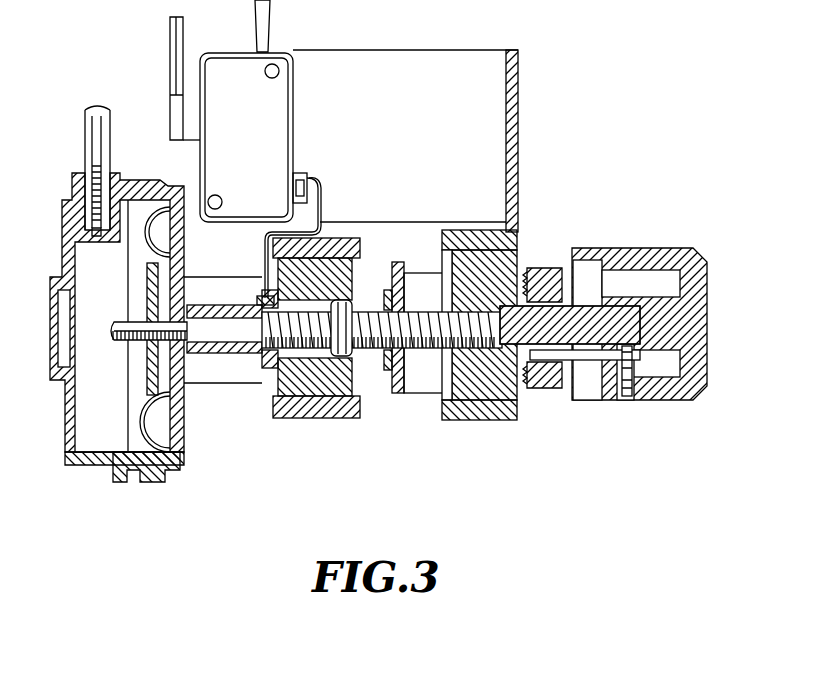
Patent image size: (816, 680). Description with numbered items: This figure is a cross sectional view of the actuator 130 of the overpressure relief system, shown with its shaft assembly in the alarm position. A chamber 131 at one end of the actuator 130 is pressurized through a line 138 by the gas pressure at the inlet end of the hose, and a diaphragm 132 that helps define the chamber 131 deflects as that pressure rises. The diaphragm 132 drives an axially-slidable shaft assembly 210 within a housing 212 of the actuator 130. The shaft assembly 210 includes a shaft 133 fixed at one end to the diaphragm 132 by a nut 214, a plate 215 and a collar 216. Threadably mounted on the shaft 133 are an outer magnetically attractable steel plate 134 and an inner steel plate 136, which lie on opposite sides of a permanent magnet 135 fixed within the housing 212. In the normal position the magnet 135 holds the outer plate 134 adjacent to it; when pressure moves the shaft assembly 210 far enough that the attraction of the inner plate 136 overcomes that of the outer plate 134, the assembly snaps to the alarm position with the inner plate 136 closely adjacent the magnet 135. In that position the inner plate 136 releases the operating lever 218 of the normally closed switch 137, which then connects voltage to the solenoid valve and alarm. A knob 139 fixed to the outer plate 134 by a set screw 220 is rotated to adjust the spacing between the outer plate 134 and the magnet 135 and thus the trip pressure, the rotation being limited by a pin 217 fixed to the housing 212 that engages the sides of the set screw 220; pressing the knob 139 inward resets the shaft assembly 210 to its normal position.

The actuator 130 is at (338, 417).
The chamber 131 is at (90, 413).
The diaphragm 132 is at (137, 397).
The shaft 133 is at (378, 372).
The outer magnetically attractable member or steel plate 134 is at (400, 390).
The permanent magnet 135 is at (300, 386).
The inner magnetically attractable member or steel plate 136 is at (272, 383).
The normally closed switch 137 is at (266, 127).
The line 138 is at (86, 138).
The knob 139 is at (670, 248).
The axially-slidable shaft assembly 210 is at (424, 302).
The housing 212 is at (218, 385).
The nut 214 is at (138, 342).
The plate 215 is at (148, 274).
The collar 216 is at (203, 303).
The pin 217 is at (578, 362).
The operating lever 218 is at (312, 190).
The set screw 220 is at (622, 397).